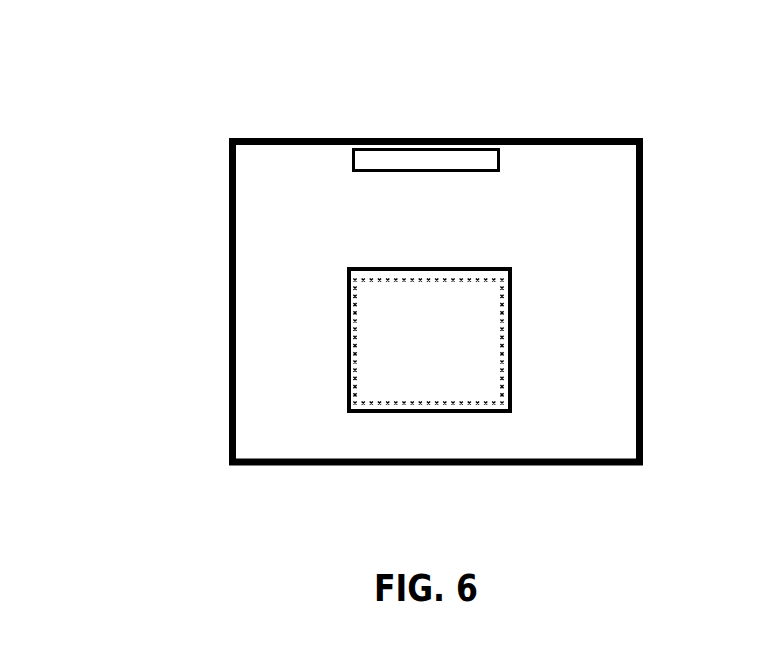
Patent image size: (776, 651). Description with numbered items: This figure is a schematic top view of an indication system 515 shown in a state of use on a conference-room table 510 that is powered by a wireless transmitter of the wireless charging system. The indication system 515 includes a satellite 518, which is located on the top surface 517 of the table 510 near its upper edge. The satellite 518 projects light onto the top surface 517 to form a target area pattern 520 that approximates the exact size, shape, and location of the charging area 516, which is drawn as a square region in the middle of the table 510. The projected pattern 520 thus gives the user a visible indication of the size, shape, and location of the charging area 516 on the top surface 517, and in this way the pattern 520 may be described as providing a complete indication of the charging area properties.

The table 510 is at (312, 137).
The indication system 515 is at (533, 48).
The charging area 516 is at (512, 342).
The top surface 517 is at (306, 178).
The satellite 518 is at (500, 162).
The target area pattern 520 is at (347, 300).